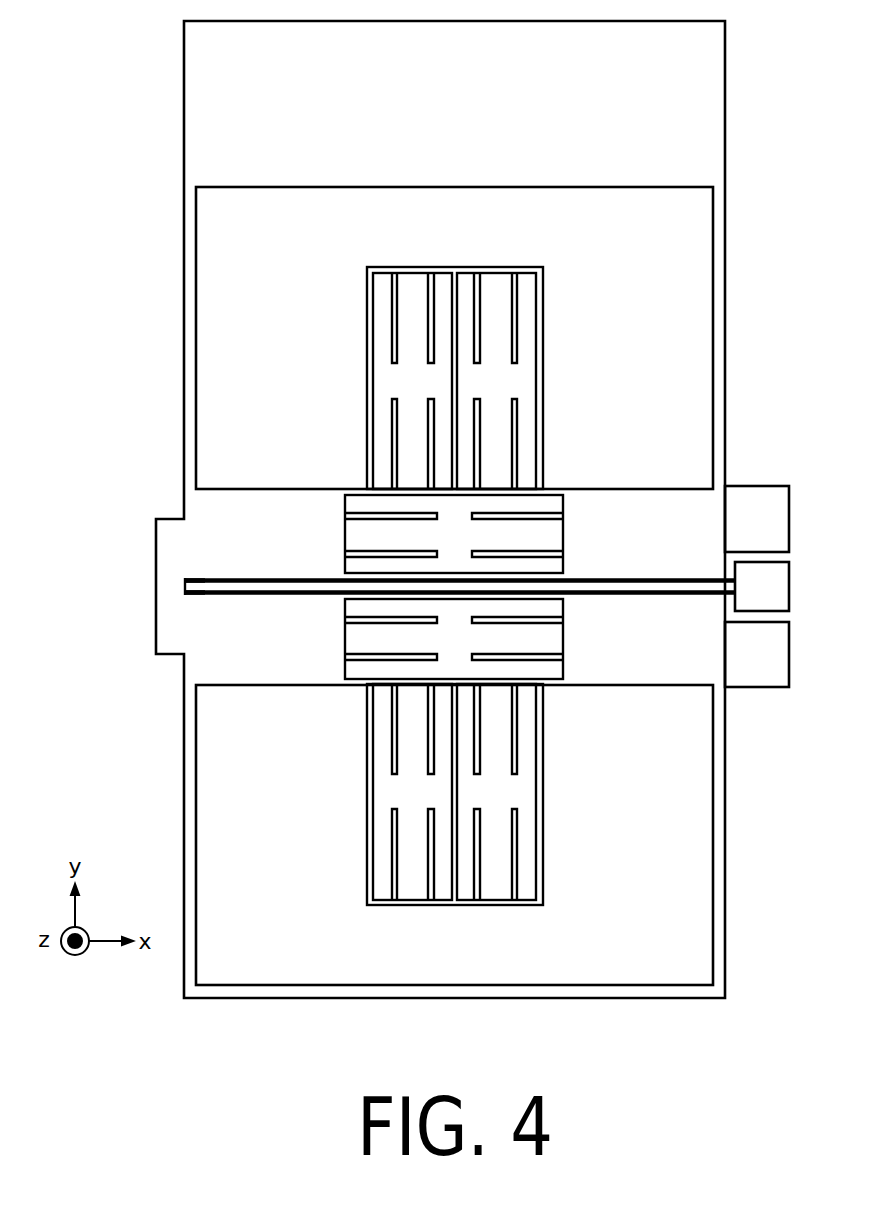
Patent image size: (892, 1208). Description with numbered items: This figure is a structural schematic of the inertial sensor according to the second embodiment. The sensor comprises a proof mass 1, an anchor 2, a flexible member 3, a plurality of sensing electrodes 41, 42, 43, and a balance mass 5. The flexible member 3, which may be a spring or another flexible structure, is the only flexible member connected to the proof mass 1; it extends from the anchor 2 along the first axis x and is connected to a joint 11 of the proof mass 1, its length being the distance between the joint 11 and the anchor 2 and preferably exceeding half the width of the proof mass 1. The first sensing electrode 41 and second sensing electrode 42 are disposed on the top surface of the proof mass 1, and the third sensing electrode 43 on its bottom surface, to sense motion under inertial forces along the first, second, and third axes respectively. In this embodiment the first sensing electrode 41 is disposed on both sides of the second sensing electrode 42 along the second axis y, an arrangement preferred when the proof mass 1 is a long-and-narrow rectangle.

The proof mass 1 is at (727, 250).
The anchor 2 is at (789, 599).
The flexible member 3 is at (196, 578).
The balance mass 5 is at (761, 483).
The joint 11 is at (185, 588).
The first sensing electrode 41 is at (527, 323).
The second sensing electrode 42 is at (550, 498).
The third sensing electrode 43 is at (379, 213).